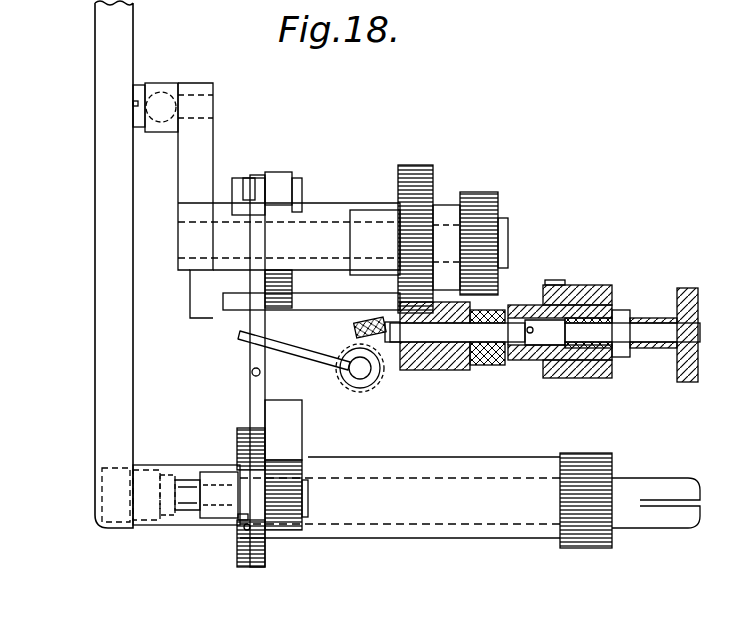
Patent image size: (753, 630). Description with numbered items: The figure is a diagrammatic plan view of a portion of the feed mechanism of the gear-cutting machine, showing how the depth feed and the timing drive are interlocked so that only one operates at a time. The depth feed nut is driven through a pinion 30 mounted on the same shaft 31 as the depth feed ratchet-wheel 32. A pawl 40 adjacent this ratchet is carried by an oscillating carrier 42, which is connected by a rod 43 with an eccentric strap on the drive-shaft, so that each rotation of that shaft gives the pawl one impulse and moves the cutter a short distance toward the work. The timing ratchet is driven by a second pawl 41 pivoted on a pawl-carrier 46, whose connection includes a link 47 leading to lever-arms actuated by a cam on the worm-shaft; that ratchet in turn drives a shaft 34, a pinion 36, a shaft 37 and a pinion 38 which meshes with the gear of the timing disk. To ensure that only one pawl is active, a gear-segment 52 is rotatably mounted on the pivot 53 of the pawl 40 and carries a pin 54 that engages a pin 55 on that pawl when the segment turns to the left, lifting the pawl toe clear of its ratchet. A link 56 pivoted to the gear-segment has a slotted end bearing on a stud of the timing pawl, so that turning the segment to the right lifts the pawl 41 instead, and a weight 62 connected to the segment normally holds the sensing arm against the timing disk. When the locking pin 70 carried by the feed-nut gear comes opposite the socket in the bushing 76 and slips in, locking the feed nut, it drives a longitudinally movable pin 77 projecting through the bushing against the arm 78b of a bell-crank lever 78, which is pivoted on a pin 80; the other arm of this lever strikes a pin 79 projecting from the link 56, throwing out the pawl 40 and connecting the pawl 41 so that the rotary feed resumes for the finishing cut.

The pinion 30 is at (585, 535).
The shaft 31 is at (425, 502).
The ratchet-wheel 32 is at (252, 558).
The shaft 34 is at (325, 230).
The pinion 36 is at (418, 178).
The shaft 37 is at (443, 230).
The pinion 38 is at (480, 200).
The pawl 40 is at (243, 455).
The pawl 41 is at (280, 238).
The carrier 42 is at (218, 508).
The rod 43 is at (105, 373).
The pawl-carrier 46 is at (200, 167).
The link 47 is at (160, 82).
The gear-segment 52 is at (283, 518).
The pivot 53 is at (310, 498).
The pin 54 is at (240, 522).
The pin 55 is at (246, 530).
The link 56 is at (250, 352).
The weight 62 is at (303, 414).
The locking pin 70 is at (545, 335).
The bushing 76 is at (487, 366).
The pin 77 is at (447, 335).
The bell-crank lever 78 is at (292, 353).
The arm 78b is at (311, 314).
The pin 79 is at (250, 372).
The pin 80 is at (360, 372).